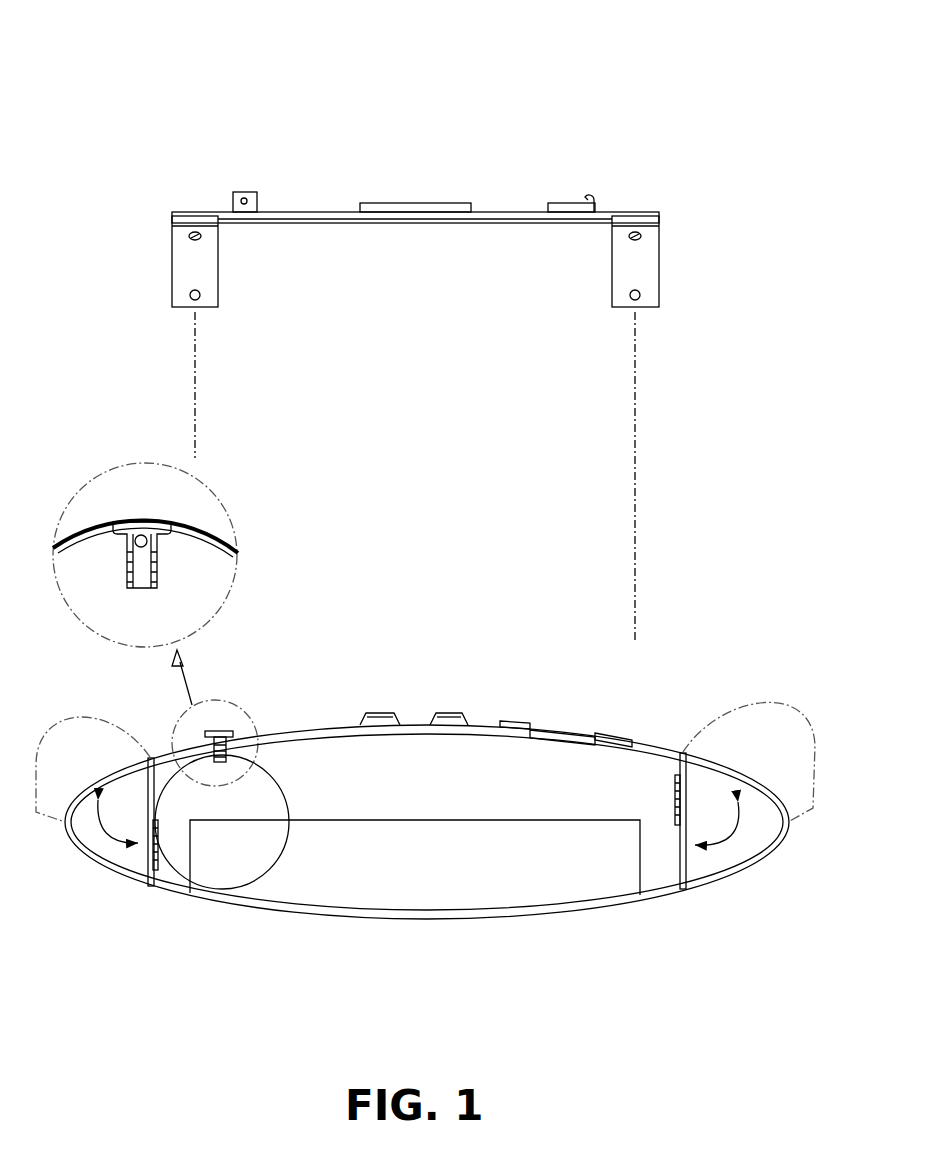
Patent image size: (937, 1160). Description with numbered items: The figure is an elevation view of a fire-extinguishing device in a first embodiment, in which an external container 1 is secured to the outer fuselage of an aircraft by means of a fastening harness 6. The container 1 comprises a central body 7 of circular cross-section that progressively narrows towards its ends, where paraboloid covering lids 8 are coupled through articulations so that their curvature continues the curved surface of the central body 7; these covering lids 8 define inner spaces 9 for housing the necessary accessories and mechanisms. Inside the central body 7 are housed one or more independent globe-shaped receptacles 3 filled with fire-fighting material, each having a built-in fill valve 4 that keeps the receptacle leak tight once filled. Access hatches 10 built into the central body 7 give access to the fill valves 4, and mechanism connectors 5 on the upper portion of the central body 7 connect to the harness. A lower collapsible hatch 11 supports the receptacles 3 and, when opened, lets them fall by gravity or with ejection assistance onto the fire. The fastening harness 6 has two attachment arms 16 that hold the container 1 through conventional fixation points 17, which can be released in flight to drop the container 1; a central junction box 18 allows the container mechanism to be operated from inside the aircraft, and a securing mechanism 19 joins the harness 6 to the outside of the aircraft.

The external container 1 is at (511, 612).
The independent globe-shaped receptacle 3 is at (212, 530).
The fill valve 4 is at (228, 732).
The mechanism connector 5 is at (447, 714).
The fastening harness 6 is at (497, 158).
The central body 7 is at (548, 724).
The covering lid 8 is at (140, 762).
The inner space 9 is at (105, 845).
The access hatch 10 is at (613, 733).
The lower collapsible hatch 11 is at (373, 882).
The attachment arm 16 is at (172, 293).
The fixation point 17 is at (192, 292).
The central junction box 18 is at (395, 204).
The securing mechanism 19 is at (240, 195).